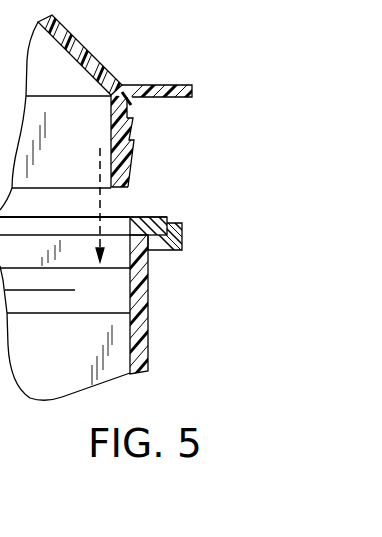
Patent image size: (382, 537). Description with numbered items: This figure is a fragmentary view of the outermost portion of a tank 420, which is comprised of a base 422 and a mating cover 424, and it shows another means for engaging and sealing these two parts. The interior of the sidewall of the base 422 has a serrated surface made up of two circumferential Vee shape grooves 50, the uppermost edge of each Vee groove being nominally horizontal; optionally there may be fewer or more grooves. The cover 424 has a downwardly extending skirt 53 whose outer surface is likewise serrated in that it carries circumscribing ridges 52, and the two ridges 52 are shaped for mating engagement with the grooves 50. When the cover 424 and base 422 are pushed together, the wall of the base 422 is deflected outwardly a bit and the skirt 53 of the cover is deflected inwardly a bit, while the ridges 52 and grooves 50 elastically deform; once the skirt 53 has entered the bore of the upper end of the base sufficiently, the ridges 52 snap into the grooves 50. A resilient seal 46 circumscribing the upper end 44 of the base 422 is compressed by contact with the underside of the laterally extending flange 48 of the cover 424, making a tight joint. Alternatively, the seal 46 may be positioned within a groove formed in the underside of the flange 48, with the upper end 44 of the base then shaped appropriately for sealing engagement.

The tank 420 is at (240, 262).
The cover 424 is at (93, 53).
The flange 48 is at (165, 97).
The skirt 53 is at (111, 128).
The ridges 52 is at (134, 156).
The resilient seal 46 is at (159, 217).
The upper end of the base 44 is at (183, 232).
The base 422 is at (149, 347).
The Vee shape grooves 50 is at (132, 286).